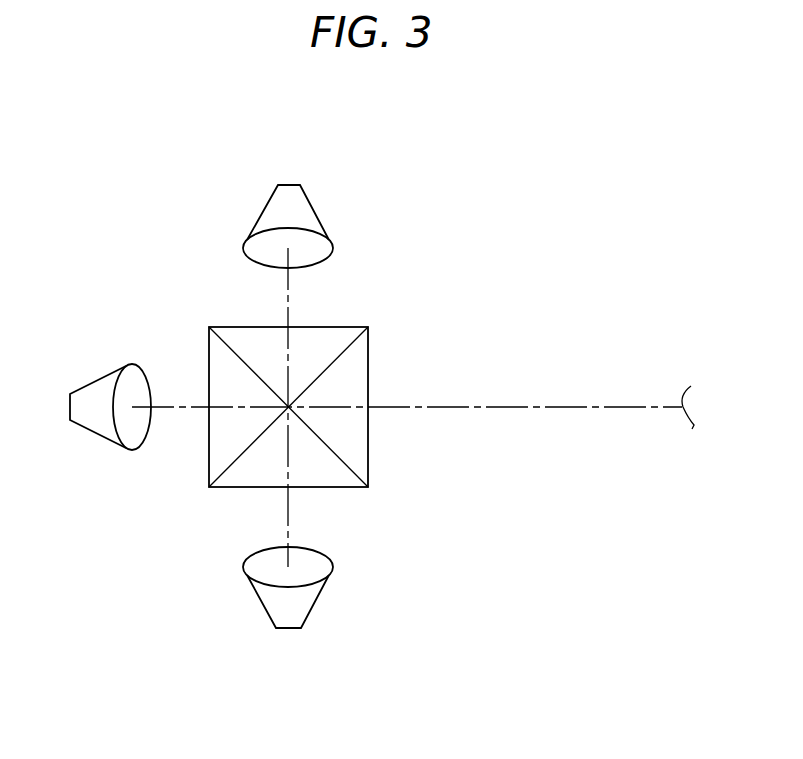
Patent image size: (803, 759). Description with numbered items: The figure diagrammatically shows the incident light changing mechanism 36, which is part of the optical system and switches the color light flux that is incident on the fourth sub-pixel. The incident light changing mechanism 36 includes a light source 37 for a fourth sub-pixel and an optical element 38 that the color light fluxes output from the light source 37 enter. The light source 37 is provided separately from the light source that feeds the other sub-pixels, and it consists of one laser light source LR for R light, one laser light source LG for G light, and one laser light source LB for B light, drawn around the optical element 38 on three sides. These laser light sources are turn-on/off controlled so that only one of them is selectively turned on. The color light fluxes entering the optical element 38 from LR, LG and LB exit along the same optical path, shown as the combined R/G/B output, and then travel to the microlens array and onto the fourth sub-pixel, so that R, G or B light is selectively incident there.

The incident light changing mechanism 36 is at (160, 178).
The light source for a fourth sub-pixel 37 is at (305, 199).
The optical element 38 is at (336, 326).